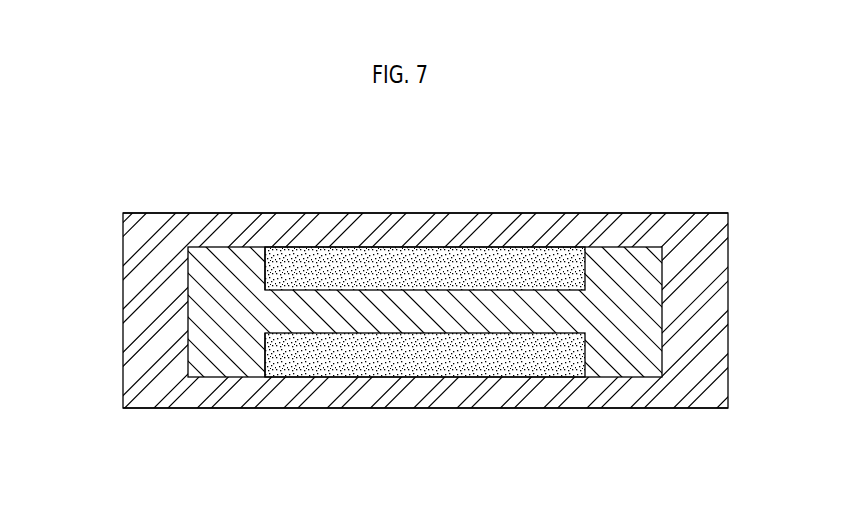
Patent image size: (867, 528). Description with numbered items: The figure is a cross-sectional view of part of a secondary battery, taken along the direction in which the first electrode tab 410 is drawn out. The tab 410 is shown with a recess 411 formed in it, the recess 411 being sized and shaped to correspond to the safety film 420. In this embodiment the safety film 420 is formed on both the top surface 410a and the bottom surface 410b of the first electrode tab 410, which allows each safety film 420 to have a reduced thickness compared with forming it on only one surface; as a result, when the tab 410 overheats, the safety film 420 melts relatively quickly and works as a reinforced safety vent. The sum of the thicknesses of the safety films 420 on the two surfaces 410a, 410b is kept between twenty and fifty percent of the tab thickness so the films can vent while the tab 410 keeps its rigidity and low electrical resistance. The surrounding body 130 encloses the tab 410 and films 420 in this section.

The encapsulation body 130 is at (272, 214).
The first electrode tab 410 is at (615, 262).
The top surface of first electrode tab 410a is at (675, 215).
The bottom surface of first electrode tab 410b is at (660, 409).
The safety film 420 is at (384, 340).
The recess 411 is at (265, 365).